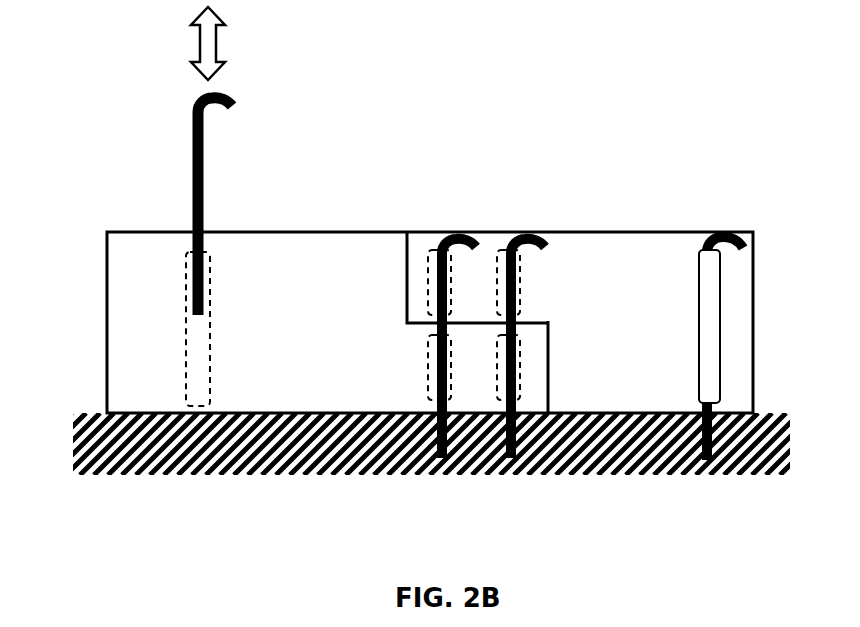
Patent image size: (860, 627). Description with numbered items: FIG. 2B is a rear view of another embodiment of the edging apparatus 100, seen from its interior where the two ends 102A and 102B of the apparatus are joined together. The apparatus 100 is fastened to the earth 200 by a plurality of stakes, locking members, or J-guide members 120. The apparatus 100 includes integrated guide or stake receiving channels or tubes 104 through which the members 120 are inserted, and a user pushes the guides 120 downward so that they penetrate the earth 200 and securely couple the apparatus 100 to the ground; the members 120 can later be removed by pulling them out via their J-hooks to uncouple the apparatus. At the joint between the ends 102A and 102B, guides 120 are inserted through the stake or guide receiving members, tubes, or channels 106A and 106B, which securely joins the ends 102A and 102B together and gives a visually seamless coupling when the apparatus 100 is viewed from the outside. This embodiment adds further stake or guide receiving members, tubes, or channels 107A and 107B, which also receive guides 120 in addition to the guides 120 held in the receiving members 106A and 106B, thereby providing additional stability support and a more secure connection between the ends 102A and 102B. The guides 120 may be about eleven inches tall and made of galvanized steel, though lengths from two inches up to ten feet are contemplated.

The edging apparatus 100 is at (126, 250).
The end 102A is at (420, 245).
The end 102B is at (537, 407).
The stake receiving channel 104 is at (186, 357).
The guide receiving channel 106A is at (428, 285).
The guide receiving channel 106B is at (428, 368).
The additional guide receiving channel 107A is at (497, 285).
The additional guide receiving channel 107B is at (495, 368).
The J-guide member 120 is at (192, 161).
The earth 200 is at (150, 457).